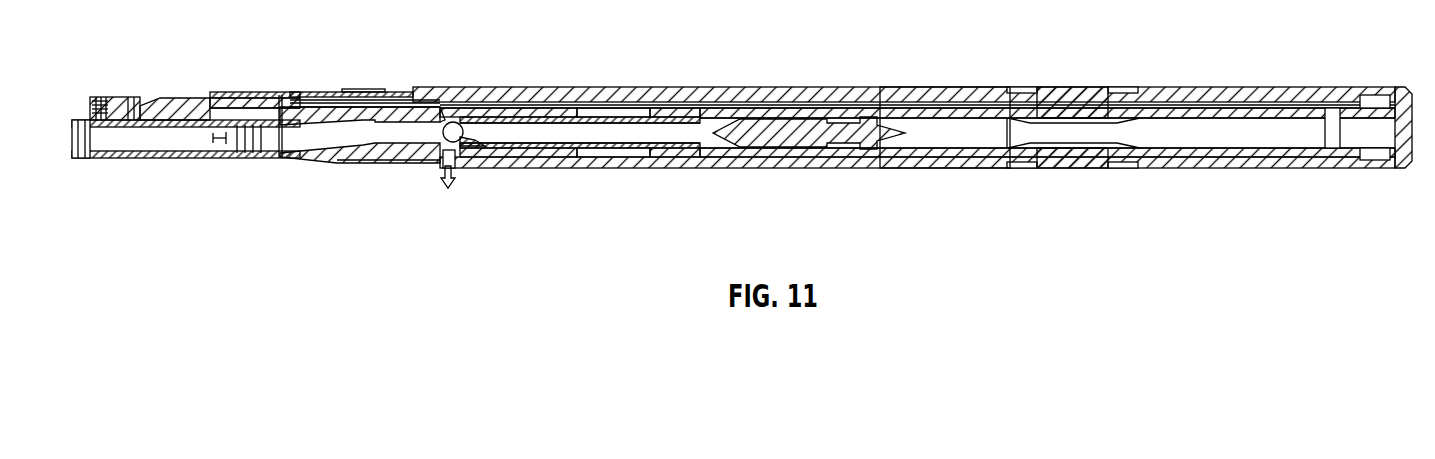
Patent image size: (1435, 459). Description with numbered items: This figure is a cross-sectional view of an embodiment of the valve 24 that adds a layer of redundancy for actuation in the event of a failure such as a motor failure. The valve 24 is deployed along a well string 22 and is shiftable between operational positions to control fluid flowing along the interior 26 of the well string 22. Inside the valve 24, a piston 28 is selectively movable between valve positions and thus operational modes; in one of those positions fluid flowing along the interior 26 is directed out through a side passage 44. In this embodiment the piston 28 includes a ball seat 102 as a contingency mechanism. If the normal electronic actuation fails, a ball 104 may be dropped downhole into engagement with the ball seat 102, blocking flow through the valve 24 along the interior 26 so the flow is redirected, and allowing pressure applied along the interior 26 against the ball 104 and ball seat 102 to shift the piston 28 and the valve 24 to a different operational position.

The well string 22 is at (160, 54).
The valve 24 is at (902, 192).
The interior 26 is at (135, 140).
The piston 28 is at (575, 160).
The side passage 44 is at (430, 165).
The ball seat 102 is at (478, 142).
The ball 104 is at (450, 126).